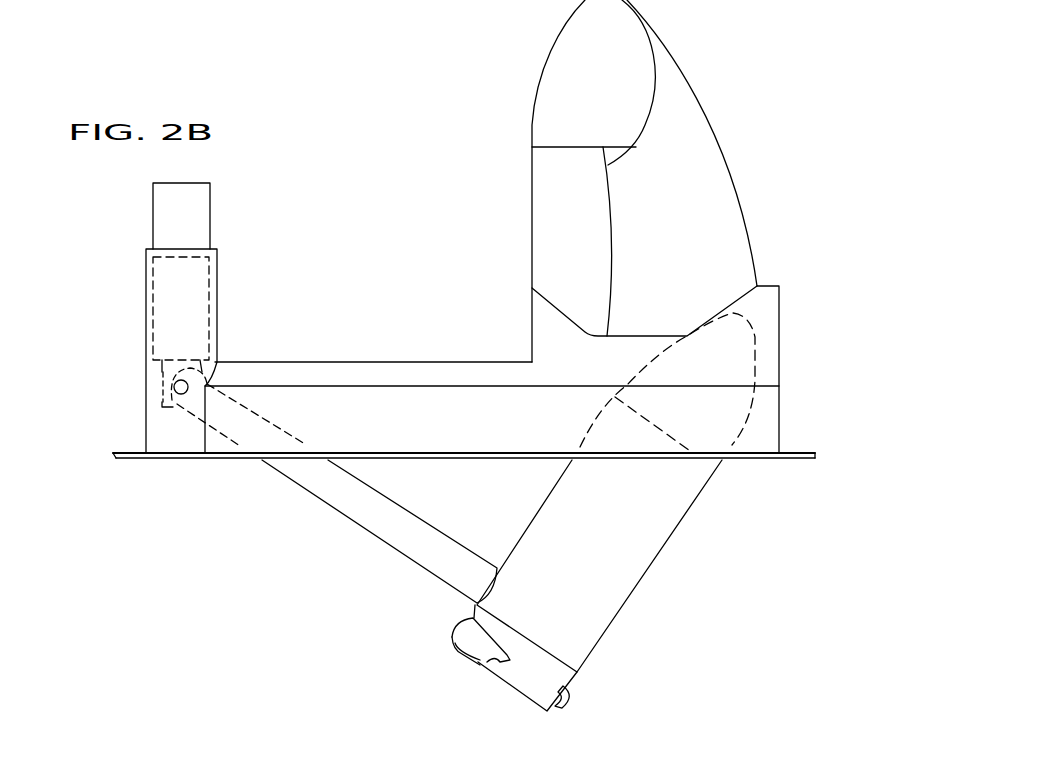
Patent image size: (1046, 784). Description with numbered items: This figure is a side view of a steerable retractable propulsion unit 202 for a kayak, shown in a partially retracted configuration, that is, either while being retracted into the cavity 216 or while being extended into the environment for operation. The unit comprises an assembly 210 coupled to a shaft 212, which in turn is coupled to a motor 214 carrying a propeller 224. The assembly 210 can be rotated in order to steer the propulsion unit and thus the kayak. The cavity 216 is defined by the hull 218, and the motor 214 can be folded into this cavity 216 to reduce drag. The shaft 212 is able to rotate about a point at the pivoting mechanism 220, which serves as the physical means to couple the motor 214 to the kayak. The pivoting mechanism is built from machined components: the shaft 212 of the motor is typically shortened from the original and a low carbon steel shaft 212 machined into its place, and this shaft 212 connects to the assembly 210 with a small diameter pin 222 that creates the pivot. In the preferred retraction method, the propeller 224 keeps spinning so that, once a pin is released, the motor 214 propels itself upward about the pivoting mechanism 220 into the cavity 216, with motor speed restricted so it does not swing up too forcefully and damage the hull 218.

The retractable propulsion unit 202 is at (726, 35).
The assembly 210 is at (186, 221).
The shaft 212 is at (355, 500).
The motor 214 is at (632, 540).
The cavity 216 is at (692, 216).
The hull 218 is at (388, 423).
The pivoting mechanism 220 is at (142, 368).
The small diameter pin 222 is at (176, 388).
The propeller 224 is at (530, 677).